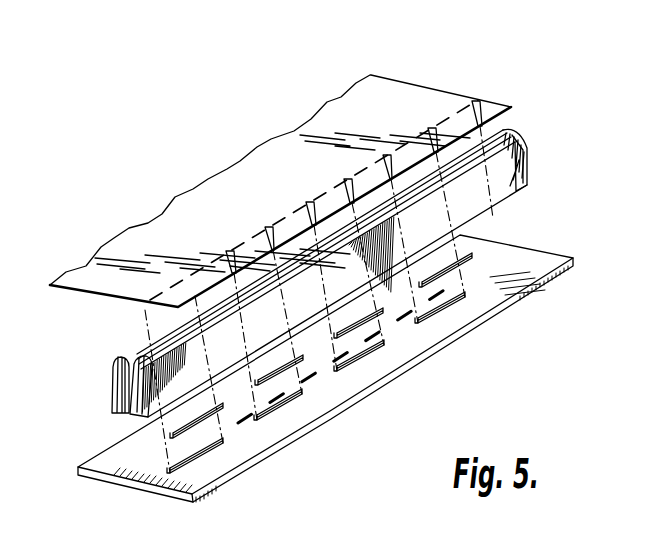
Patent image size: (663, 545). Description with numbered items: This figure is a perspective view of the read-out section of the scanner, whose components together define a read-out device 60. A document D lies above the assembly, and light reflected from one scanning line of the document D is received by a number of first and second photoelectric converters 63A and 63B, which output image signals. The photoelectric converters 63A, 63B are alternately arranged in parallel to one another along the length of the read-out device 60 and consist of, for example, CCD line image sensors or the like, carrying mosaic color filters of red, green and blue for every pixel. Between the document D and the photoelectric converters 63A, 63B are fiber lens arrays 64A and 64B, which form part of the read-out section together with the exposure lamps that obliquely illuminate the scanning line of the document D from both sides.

The document D is at (431, 100).
The read-out device 60 is at (552, 265).
The first photoelectric converters 63A is at (447, 302).
The second photoelectric converters 63B is at (472, 259).
The fiber lens array 64A is at (521, 183).
The fiber lens array 64B is at (115, 396).